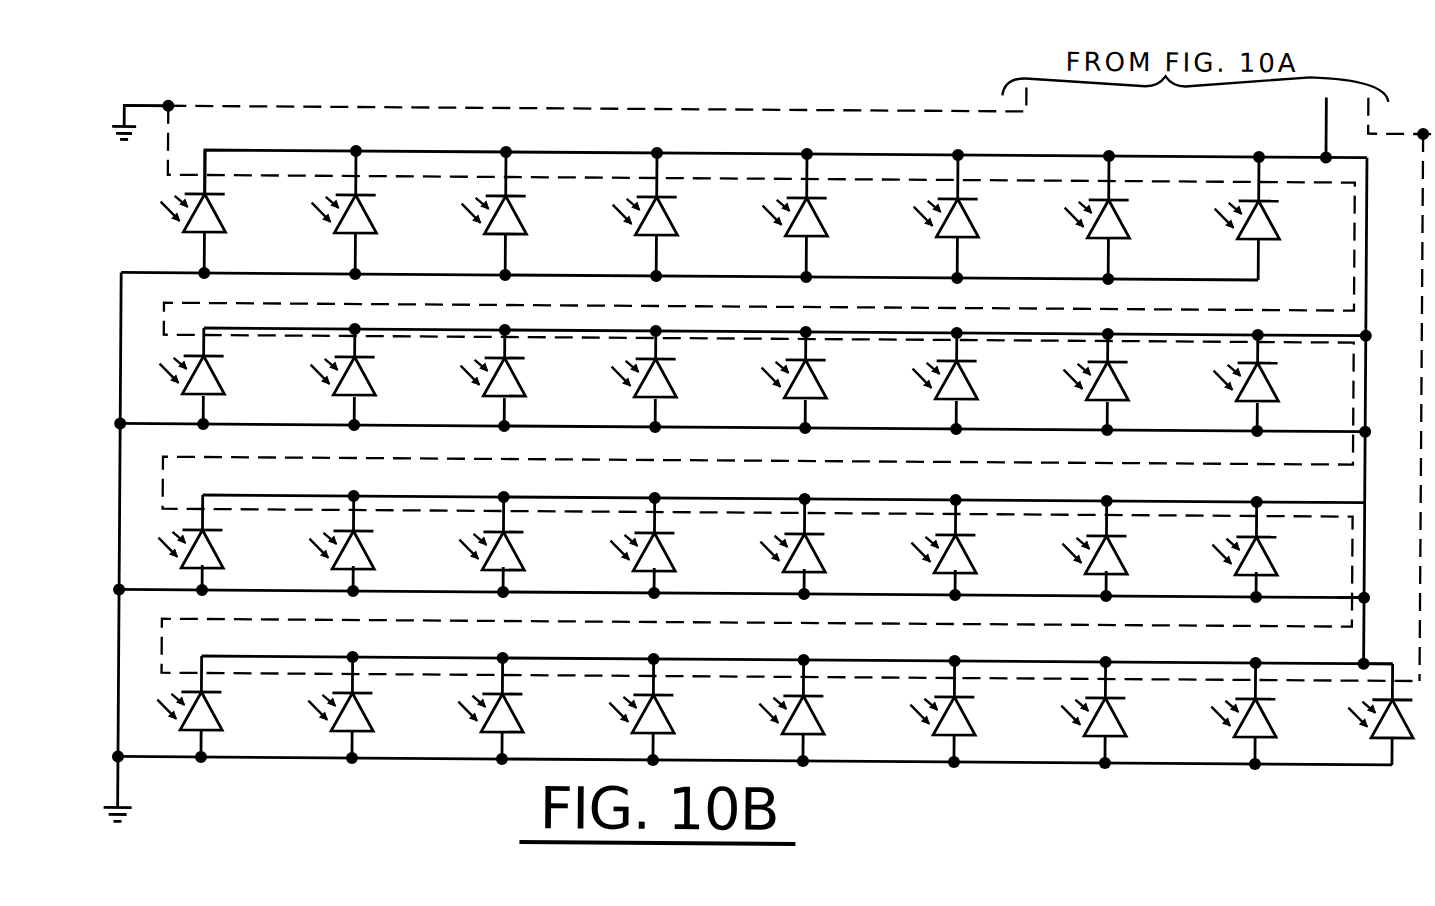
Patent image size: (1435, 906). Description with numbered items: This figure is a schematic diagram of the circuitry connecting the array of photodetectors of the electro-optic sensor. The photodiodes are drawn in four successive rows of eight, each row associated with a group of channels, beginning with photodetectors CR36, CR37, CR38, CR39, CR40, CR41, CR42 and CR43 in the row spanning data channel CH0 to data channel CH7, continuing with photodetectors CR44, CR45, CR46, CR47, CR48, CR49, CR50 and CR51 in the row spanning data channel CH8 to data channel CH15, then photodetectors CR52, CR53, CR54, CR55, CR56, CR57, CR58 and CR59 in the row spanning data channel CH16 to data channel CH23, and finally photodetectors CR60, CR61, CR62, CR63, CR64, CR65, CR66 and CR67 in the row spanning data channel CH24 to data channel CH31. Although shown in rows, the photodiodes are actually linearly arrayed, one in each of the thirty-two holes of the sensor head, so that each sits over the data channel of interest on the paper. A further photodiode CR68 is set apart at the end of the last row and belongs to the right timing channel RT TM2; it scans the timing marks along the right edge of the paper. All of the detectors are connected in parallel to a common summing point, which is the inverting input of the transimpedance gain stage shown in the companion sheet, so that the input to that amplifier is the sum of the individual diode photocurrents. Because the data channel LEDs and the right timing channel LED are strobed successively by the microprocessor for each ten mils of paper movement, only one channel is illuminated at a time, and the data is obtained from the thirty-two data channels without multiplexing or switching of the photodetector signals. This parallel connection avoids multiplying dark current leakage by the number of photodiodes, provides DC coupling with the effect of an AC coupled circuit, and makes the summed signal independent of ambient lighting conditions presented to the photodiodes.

The photodetector CR36 is at (239, 212).
The photodetector CR37 is at (369, 213).
The photodetector CR38 is at (519, 214).
The photodetector CR39 is at (670, 215).
The photodetector CR40 is at (820, 216).
The photodetector CR41 is at (971, 217).
The photodetector CR42 is at (1122, 218).
The photodetector CR43 is at (1272, 219).
The photodetector CR44 is at (217, 376).
The photodetector CR45 is at (368, 377).
The photodetector CR46 is at (518, 378).
The photodetector CR47 is at (669, 379).
The photodetector CR48 is at (819, 380).
The photodetector CR49 is at (970, 381).
The photodetector CR50 is at (1121, 382).
The photodetector CR51 is at (1271, 383).
The photodetector CR52 is at (216, 543).
The photodetector CR53 is at (367, 544).
The photodetector CR54 is at (517, 545).
The photodetector CR55 is at (668, 546).
The photodetector CR56 is at (818, 547).
The photodetector CR57 is at (969, 548).
The photodetector CR58 is at (1120, 549).
The photodetector CR59 is at (1270, 550).
The photodetector CR60 is at (215, 707).
The photodetector CR61 is at (366, 708).
The photodetector CR62 is at (516, 709).
The photodetector CR63 is at (667, 710).
The photodetector CR64 is at (817, 711).
The photodetector CR65 is at (968, 712).
The photodetector CR66 is at (1119, 713).
The photodetector CR67 is at (1269, 714).
The photodiode CR68 is at (1390, 742).
The data channel CH0 is at (778, 161).
The data channel CH7 is at (1277, 127).
The data channel CH8 is at (689, 303).
The data channel CH15 is at (743, 368).
The data channel CH16 is at (771, 485).
The data channel CH23 is at (742, 533).
The data channel CH24 is at (790, 646).
The data channel CH31 is at (755, 697).
The right timing channel TM2 is at (1342, 651).
The right timing channel RT is at (1333, 612).